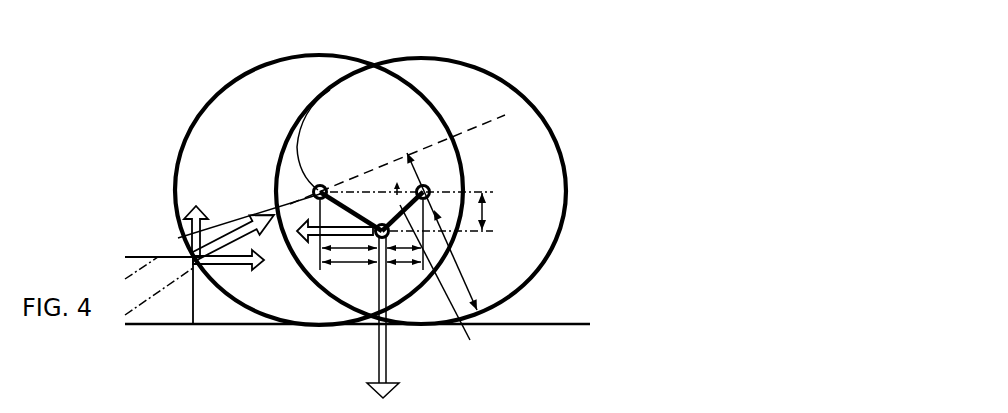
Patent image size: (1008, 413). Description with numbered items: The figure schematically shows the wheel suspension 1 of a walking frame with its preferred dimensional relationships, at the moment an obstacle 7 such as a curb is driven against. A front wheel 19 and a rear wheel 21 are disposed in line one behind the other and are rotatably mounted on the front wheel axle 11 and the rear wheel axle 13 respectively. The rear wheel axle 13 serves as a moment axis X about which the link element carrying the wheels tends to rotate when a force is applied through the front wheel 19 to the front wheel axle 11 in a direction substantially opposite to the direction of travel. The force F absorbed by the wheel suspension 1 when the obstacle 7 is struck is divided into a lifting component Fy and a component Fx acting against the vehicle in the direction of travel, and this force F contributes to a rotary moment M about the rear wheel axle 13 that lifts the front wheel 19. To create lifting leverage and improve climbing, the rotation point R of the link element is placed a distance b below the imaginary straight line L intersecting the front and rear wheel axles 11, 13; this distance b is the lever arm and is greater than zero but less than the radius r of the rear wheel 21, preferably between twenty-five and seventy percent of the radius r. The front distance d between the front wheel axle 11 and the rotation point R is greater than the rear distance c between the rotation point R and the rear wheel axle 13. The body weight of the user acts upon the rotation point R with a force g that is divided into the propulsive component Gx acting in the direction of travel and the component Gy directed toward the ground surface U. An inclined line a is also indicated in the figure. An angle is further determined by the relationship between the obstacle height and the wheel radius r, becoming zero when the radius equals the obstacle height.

The wheel suspension 1 is at (133, 96).
The obstacle 7 is at (135, 256).
The front wheel axle 11 is at (330, 90).
The rear wheel axle 13 is at (428, 226).
The front wheel 19 is at (236, 82).
The rear wheel 21 is at (512, 86).
The radius of the rear wheel r is at (222, 217).
The rotation point R is at (385, 226).
The imaginary straight line L is at (379, 226).
The propulsive force component Gx is at (376, 229).
The ground-directed force component Gy is at (377, 361).
The moment axis X is at (432, 183).
The inclined line a is at (430, 142).
The rotary moment M is at (430, 180).
The lever arm distance b is at (487, 208).
The rear distance c is at (408, 266).
The front distance d is at (324, 266).
The force F is at (266, 240).
The horizontal force component Fx is at (250, 268).
The lifting force Fy is at (190, 222).
The force g is at (453, 323).
The ground surface U is at (558, 322).